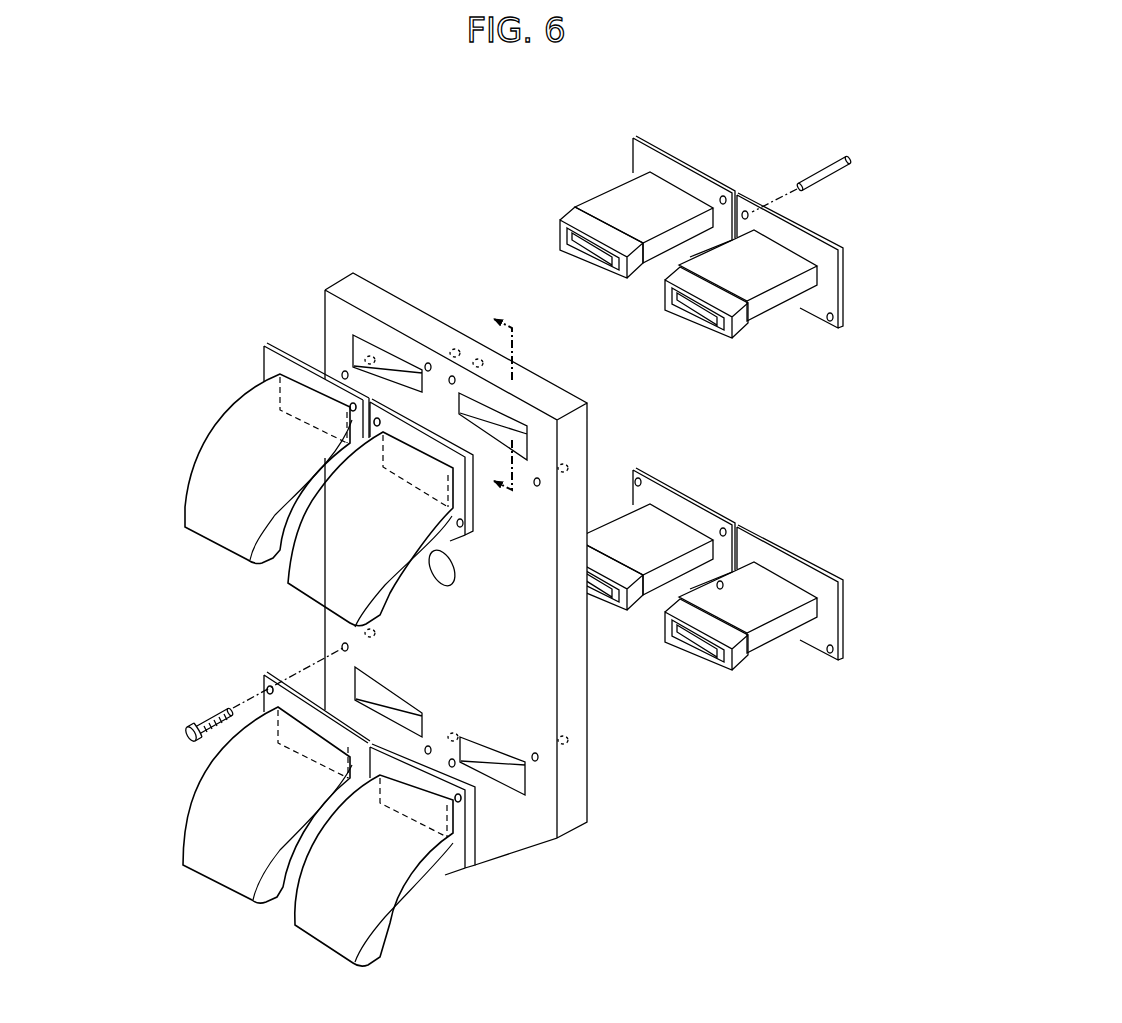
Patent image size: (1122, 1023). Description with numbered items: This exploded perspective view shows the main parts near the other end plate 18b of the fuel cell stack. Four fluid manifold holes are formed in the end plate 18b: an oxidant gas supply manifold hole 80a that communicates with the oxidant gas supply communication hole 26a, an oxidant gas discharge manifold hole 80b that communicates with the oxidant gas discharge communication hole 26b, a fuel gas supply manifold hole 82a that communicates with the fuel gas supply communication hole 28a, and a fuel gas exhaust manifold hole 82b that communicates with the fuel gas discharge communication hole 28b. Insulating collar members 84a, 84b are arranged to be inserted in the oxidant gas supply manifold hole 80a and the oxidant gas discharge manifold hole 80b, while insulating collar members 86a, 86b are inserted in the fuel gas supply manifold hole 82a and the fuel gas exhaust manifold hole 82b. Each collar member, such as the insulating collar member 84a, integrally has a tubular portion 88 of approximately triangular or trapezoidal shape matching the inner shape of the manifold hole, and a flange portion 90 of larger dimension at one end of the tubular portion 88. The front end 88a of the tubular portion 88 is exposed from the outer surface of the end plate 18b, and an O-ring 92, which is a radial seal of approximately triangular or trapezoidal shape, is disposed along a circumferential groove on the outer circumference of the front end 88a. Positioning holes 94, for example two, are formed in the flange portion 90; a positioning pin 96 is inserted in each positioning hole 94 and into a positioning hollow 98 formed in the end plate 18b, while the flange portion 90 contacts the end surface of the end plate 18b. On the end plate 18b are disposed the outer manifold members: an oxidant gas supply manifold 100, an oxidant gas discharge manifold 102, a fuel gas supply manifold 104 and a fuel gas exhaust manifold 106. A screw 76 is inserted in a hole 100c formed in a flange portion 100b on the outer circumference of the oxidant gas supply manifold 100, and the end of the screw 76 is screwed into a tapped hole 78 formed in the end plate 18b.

The end plate 18b is at (341, 281).
The fuel gas supply manifold hole 82a is at (406, 318).
The fuel gas supply communication hole 28a is at (399, 369).
The oxidant gas supply manifold hole 80a is at (534, 399).
The oxidant gas supply communication hole 26a is at (524, 432).
The oxidant gas discharge manifold hole 80b is at (410, 697).
The oxidant gas discharge communication hole 26b is at (402, 712).
The fuel gas exhaust manifold hole 82b is at (503, 745).
The fuel gas discharge communication hole 28b is at (502, 760).
The tapped hole 78 is at (539, 477).
The positioning hollow 98 is at (556, 479).
The fuel gas supply manifold 104 is at (265, 341).
The oxidant gas supply manifold 100 is at (415, 513).
The flange portion 100b is at (480, 525).
The hole 100c is at (447, 587).
The oxidant gas discharge manifold 102 is at (264, 671).
The fuel gas exhaust manifold 106 is at (482, 849).
The screw 76 is at (205, 720).
The insulating collar member 86a is at (634, 135).
The insulating collar member 86b is at (770, 664).
The insulating collar member 84a is at (797, 318).
The insulating collar member 84b is at (618, 622).
The tubular portion 88 is at (657, 252).
The front end 88a is at (615, 240).
The flange portion 90 is at (698, 175).
The O-ring 92 is at (606, 220).
The positioning hole 94 is at (827, 324).
The positioning pin 96 is at (812, 177).